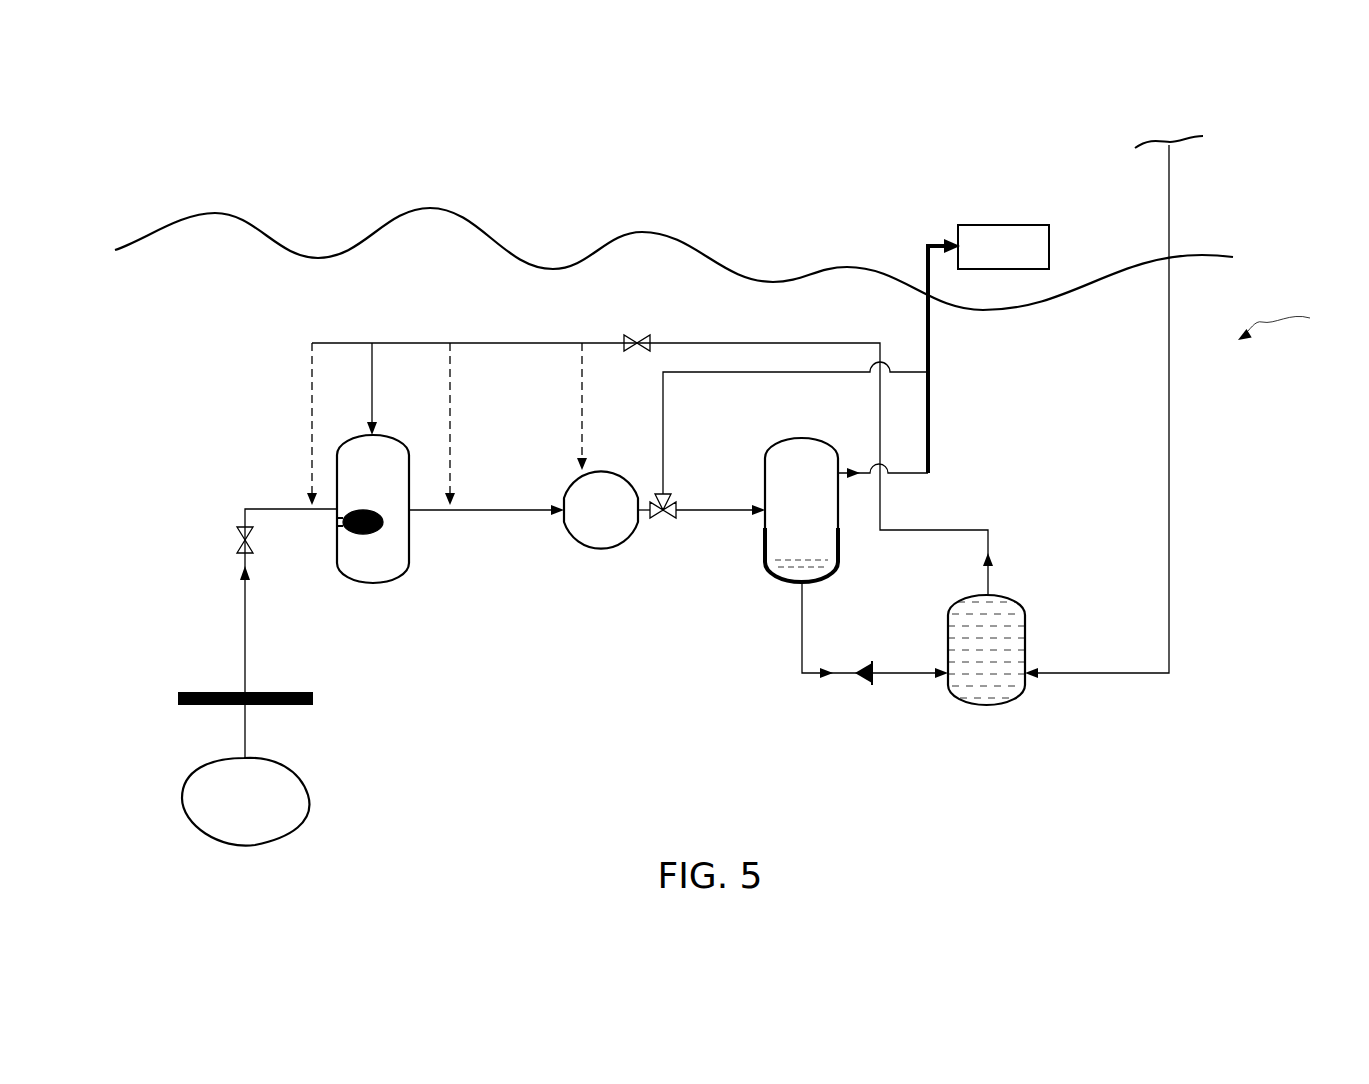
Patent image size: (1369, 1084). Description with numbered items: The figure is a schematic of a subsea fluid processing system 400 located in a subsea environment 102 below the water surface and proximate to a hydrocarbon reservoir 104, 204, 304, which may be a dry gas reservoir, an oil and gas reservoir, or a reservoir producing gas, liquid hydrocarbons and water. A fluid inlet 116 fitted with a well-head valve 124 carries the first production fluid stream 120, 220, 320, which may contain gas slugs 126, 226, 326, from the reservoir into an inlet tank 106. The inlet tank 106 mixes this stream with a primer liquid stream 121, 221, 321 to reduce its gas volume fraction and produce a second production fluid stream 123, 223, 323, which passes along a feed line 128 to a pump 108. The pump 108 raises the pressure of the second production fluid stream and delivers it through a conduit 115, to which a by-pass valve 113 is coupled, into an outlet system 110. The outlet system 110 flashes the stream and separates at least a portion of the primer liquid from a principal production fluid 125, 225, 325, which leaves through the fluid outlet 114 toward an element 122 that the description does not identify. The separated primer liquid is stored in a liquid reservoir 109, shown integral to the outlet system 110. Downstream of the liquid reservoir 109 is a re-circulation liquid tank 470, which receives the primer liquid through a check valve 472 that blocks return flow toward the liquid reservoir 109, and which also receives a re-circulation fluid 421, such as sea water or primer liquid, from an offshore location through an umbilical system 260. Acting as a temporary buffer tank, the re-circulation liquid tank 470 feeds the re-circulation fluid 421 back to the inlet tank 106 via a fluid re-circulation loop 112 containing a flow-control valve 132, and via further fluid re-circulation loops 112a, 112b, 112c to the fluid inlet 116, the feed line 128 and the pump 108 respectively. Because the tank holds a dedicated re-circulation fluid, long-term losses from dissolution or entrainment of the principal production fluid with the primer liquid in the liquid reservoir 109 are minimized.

The subsea environment 102 is at (478, 217).
The hydrocarbon reservoir 104 is at (180, 793).
The hydrocarbon reservoir 204 is at (180, 793).
The hydrocarbon reservoir 304 is at (180, 798).
The inlet tank 106 is at (409, 535).
The pump 108 is at (610, 548).
The liquid reservoir 109 is at (765, 545).
The outlet system 110 is at (810, 437).
The fluid re-circulation loop 112 is at (373, 360).
The fluid re-circulation loop 112a is at (310, 356).
The fluid re-circulation loop 112b is at (448, 356).
The fluid re-circulation loop 112c is at (580, 356).
The by-pass valve 113 is at (655, 500).
The fluid outlet 114 is at (928, 413).
The conduit 115 is at (702, 505).
The fluid inlet 116 is at (243, 635).
The first production fluid stream 120 is at (156, 562).
The first production fluid stream 220 is at (156, 562).
The first production fluid stream 320 is at (240, 565).
The primer liquid stream 121 is at (814, 682).
The primer liquid stream 221 is at (814, 682).
The primer liquid stream 321 is at (790, 583).
The surface facility 122 is at (1049, 247).
The second production fluid stream 123 is at (682, 480).
The second production fluid stream 223 is at (682, 480).
The second production fluid stream 323 is at (763, 507).
The well-head valve 124 is at (238, 535).
The principal production fluid 125 is at (943, 485).
The principal production fluid 225 is at (943, 485).
The principal production fluid 325 is at (858, 482).
The gas slugs 126 is at (385, 569).
The gas slugs 226 is at (385, 569).
The gas slugs 326 is at (357, 533).
The feed line 128 is at (516, 505).
The flow-control valve 132 is at (630, 333).
The umbilical system 260 is at (1169, 505).
The subsea fluid processing system 400 is at (1296, 323).
The re-circulation fluid 421 is at (370, 434).
The re-circulation liquid tank 470 is at (1000, 704).
The check valve 472 is at (868, 688).